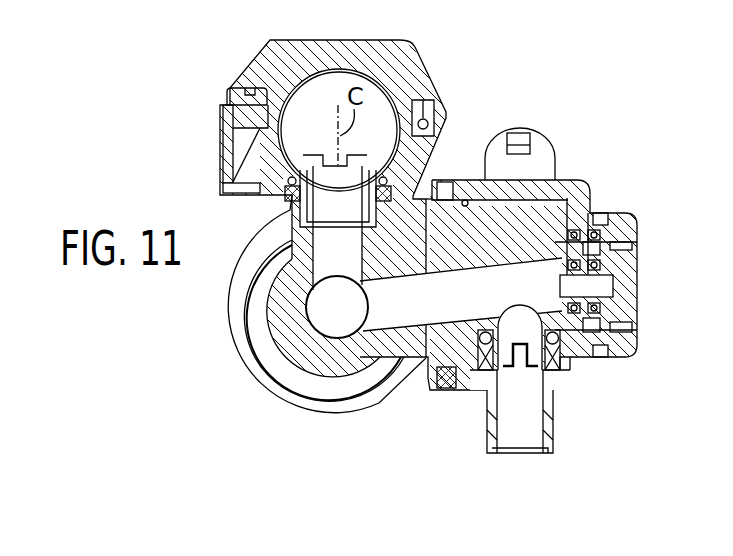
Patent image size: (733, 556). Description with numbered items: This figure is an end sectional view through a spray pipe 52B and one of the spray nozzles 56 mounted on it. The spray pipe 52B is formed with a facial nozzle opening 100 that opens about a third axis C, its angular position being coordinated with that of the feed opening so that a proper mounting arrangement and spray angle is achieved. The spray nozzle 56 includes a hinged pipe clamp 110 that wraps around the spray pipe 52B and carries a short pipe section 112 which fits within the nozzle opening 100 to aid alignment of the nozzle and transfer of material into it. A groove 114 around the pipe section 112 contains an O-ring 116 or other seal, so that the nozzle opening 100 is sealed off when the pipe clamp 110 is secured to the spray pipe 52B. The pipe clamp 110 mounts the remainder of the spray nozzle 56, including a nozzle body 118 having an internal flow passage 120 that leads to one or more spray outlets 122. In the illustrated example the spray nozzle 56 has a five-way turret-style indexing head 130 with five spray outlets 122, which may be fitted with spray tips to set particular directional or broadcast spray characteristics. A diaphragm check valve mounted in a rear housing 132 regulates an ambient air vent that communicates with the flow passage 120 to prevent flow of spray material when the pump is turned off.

The hinged pipe clamp 110 is at (380, 40).
The spray pipe 52B is at (387, 78).
The short pipe section 112 is at (305, 165).
The nozzle opening 100 is at (290, 190).
The groove 114 is at (382, 182).
The O-ring 116 is at (366, 198).
The internal flow passage 120 is at (330, 318).
The rear housing 132 is at (262, 331).
The nozzle body 118 is at (426, 378).
The spray nozzle 56 is at (608, 165).
The turret-style indexing head 130 is at (580, 373).
The spray outlet 122 is at (537, 128).